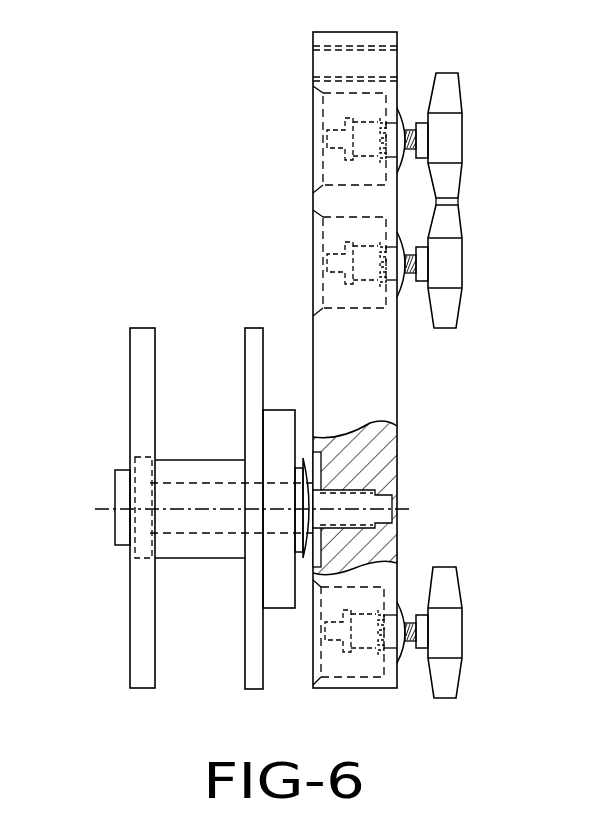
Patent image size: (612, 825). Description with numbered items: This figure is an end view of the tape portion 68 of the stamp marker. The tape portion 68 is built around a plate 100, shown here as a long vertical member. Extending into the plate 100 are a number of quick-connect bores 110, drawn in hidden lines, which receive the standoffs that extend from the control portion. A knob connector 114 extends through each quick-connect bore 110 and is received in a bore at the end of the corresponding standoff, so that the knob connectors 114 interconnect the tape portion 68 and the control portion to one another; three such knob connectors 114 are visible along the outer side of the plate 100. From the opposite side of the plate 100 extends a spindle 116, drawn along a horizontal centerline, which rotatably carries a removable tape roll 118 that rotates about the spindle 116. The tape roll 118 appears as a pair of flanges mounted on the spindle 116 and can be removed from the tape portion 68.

The tape portion 68 is at (97, 157).
The plate 100 is at (368, 355).
The quick-connect bore 110 is at (355, 93).
The knob connector 114 is at (440, 138).
The spindle 116 is at (178, 460).
The removable tape roll 118 is at (142, 363).